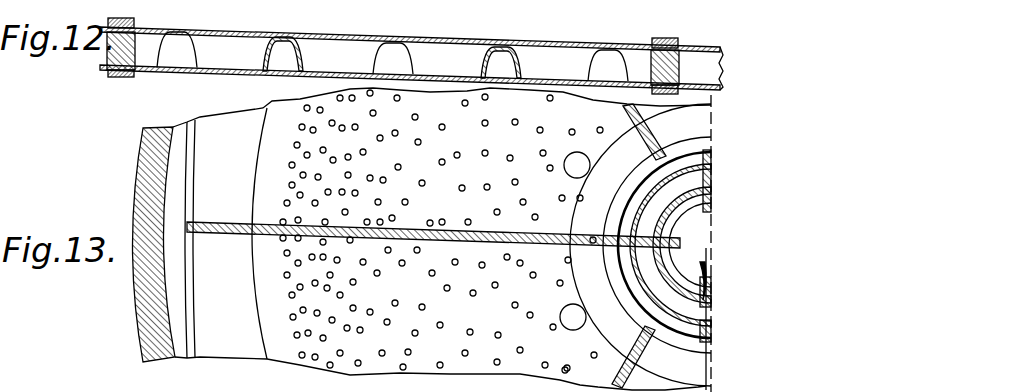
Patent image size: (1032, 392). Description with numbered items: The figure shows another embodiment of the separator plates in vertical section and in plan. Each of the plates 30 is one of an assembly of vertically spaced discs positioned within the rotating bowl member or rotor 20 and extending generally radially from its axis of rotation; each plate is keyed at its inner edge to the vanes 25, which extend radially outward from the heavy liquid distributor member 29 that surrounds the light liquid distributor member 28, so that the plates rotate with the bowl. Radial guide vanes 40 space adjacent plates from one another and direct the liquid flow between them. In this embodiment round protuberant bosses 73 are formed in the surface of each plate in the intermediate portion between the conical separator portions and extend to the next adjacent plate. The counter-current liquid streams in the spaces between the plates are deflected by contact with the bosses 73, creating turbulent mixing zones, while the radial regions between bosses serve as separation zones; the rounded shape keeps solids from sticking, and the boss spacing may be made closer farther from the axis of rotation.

In FIG. 13, the bowl member or rotor 20 is at (150, 307).
In FIG. 13, the vanes 25 is at (630, 246).
In FIG. 13, the light liquid distributor member 28 is at (678, 203).
In FIG. 13, the heavy liquid distributor member 29 is at (655, 193).
In FIG. 12, the plates or discs 30 is at (211, 72).
In FIG. 12, the radial guide vanes 40 is at (683, 58).
In FIG. 12, the round protuberant bosses 73 is at (268, 42).
In FIG. 13, the round protuberant bosses 73 is at (297, 182).